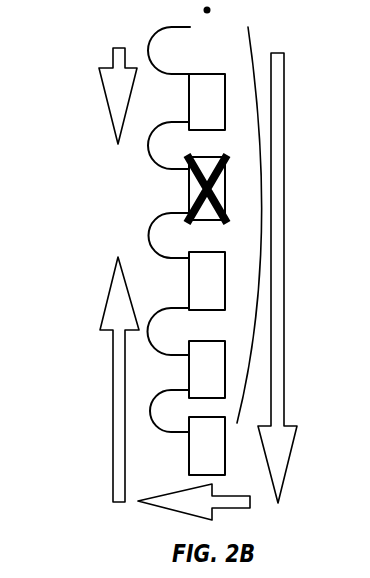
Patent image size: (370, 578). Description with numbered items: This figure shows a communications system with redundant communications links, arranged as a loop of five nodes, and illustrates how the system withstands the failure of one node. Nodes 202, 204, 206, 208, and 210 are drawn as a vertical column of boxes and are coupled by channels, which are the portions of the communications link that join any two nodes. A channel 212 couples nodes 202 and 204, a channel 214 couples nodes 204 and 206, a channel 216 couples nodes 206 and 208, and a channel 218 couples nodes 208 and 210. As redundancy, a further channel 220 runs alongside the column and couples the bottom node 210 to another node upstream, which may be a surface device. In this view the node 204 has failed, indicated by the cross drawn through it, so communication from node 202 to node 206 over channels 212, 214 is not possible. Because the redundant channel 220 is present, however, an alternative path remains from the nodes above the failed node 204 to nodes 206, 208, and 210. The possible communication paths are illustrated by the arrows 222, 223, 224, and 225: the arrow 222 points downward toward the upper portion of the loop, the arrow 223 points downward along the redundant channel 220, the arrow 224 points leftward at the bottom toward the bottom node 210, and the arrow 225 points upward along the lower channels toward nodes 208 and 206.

The node 202 is at (225, 102).
The node 204 is at (225, 190).
The node 206 is at (237, 275).
The node 208 is at (227, 370).
The node 210 is at (225, 443).
The channel 212 is at (148, 147).
The channel 214 is at (148, 236).
The channel 216 is at (148, 331).
The channel 218 is at (148, 410).
The redundant channel 220 is at (252, 40).
The arrow 222 is at (120, 67).
The arrow 223 is at (278, 110).
The arrow 224 is at (165, 505).
The arrow 225 is at (120, 462).